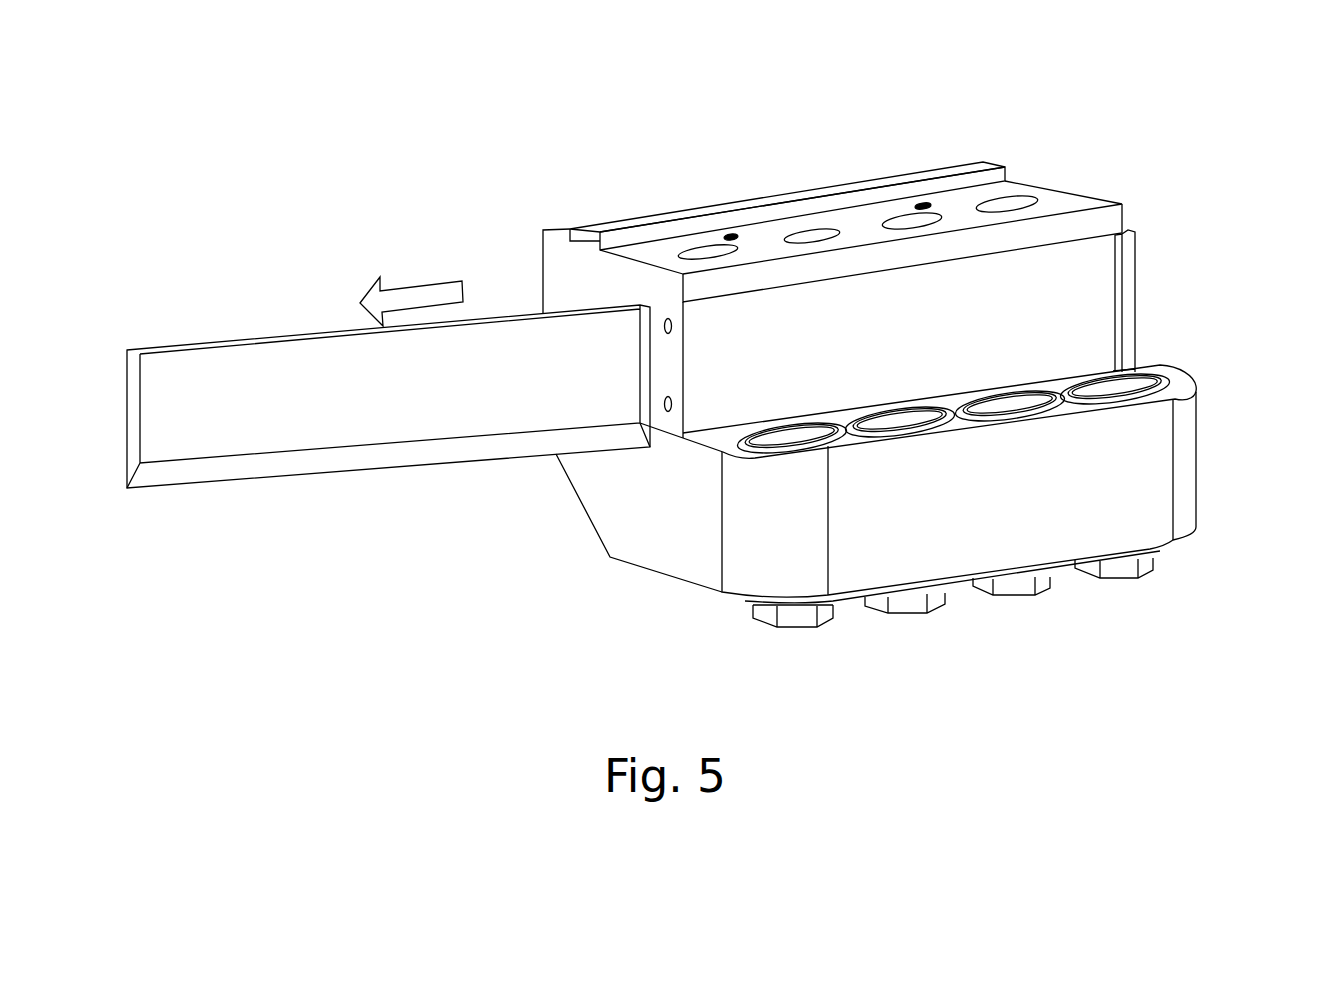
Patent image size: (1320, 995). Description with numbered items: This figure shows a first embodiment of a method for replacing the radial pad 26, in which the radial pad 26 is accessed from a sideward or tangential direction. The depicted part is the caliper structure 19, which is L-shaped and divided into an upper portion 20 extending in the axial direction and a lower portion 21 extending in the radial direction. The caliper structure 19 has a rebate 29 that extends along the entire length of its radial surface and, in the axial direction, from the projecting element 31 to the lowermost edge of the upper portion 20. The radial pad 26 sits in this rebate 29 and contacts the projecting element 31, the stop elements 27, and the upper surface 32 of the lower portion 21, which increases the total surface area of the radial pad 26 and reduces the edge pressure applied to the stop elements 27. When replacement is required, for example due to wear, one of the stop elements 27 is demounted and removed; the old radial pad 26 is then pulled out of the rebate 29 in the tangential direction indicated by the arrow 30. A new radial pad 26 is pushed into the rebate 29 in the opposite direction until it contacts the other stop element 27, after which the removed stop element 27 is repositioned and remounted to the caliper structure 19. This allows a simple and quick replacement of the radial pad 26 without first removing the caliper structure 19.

The caliper structure 19 is at (766, 170).
The upper portion 20 is at (568, 272).
The lower portion 21 is at (658, 543).
The radial pad 26 is at (418, 409).
The stop element 27 is at (1128, 273).
The rebate 29 is at (1073, 329).
The arrow 30 is at (422, 279).
The projecting element 31 is at (1105, 220).
The upper surface 32 is at (1172, 385).